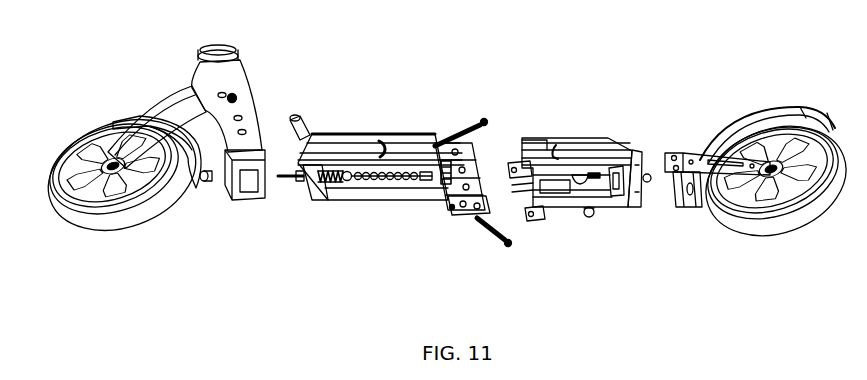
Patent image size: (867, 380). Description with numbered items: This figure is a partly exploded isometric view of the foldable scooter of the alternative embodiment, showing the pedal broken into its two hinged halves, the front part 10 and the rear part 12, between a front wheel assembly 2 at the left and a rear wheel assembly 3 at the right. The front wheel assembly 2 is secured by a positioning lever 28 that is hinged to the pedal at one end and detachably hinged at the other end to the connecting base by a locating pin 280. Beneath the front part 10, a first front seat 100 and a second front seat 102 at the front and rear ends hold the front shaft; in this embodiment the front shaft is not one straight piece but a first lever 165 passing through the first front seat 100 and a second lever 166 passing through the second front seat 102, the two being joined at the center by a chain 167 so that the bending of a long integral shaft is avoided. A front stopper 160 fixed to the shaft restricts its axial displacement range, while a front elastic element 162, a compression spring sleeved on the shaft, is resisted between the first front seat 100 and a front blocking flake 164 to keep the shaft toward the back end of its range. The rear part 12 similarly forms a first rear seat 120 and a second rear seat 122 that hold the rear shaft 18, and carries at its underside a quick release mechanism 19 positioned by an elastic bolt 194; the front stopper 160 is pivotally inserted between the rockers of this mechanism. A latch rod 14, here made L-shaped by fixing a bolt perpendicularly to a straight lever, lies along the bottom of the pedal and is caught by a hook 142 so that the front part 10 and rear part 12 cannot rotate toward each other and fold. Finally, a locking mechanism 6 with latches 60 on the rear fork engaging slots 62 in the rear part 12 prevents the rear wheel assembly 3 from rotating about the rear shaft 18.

The front wheel assembly 2 is at (152, 203).
The rear wheel assembly 3 is at (768, 222).
The locking mechanism 6 is at (706, 132).
The front part 10 is at (378, 143).
The rear part 12 is at (592, 138).
The latch rod 14 is at (465, 127).
The rear shaft 18 is at (637, 207).
The quick release mechanism 19 is at (578, 185).
The positioning lever 28 is at (302, 128).
The latches 60 is at (717, 131).
The slots 62 is at (672, 172).
The first front seat 100 is at (312, 165).
The second front seat 102 is at (440, 163).
The first rear seat 120 is at (536, 194).
The second rear seat 122 is at (618, 168).
The hook 142 is at (557, 145).
The front stopper 160 is at (452, 215).
The front elastic element 162 is at (335, 184).
The front blocking flake 164 is at (347, 184).
The first lever 165 is at (300, 180).
The second lever 166 is at (431, 182).
The chain 167 is at (393, 185).
The elastic bolt 194 is at (592, 217).
The locating pin 280 is at (235, 95).